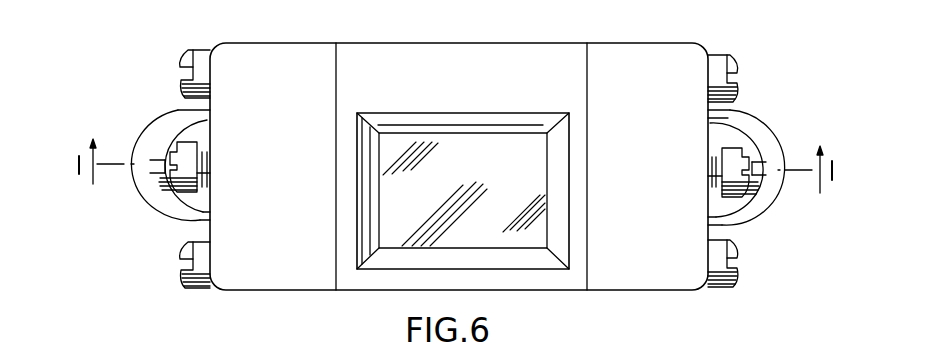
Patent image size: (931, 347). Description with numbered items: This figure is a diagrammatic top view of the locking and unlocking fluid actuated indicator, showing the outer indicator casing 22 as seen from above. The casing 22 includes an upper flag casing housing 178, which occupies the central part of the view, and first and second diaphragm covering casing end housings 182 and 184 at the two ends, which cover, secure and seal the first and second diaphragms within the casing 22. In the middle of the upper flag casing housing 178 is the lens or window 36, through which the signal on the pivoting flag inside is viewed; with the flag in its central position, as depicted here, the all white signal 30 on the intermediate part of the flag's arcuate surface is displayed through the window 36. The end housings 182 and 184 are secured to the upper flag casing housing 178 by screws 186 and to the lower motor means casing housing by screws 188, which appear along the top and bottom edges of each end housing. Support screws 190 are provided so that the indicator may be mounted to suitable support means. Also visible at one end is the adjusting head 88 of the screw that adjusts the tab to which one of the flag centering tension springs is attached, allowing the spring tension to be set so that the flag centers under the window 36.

The outer indicator casing 22 is at (470, 46).
The upper flag casing housing 178 is at (272, 53).
The white signal 30 is at (467, 143).
The lens or window 36 is at (530, 181).
The screws 188 is at (188, 54).
The first diaphragm covering casing end housing 182 is at (187, 128).
The second diaphragm covering casing end housing 184 is at (732, 208).
The adjusting head 88 is at (717, 111).
The screws 186 is at (157, 180).
The support screws 190 is at (175, 183).